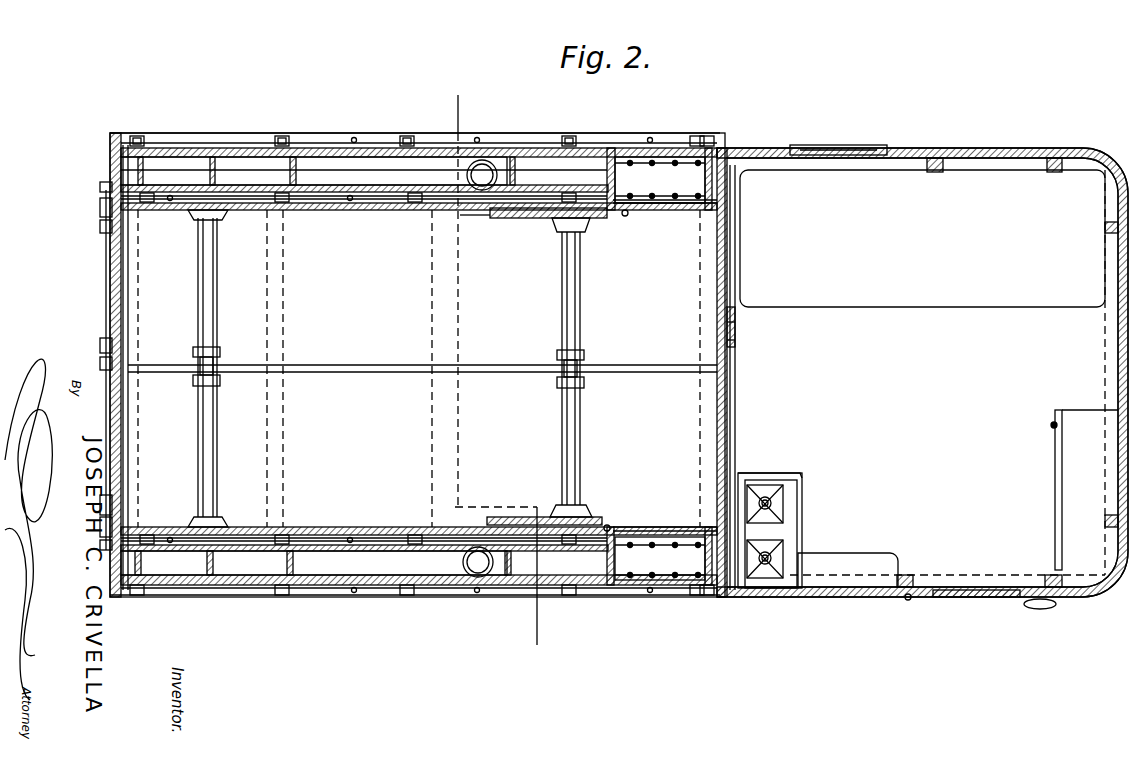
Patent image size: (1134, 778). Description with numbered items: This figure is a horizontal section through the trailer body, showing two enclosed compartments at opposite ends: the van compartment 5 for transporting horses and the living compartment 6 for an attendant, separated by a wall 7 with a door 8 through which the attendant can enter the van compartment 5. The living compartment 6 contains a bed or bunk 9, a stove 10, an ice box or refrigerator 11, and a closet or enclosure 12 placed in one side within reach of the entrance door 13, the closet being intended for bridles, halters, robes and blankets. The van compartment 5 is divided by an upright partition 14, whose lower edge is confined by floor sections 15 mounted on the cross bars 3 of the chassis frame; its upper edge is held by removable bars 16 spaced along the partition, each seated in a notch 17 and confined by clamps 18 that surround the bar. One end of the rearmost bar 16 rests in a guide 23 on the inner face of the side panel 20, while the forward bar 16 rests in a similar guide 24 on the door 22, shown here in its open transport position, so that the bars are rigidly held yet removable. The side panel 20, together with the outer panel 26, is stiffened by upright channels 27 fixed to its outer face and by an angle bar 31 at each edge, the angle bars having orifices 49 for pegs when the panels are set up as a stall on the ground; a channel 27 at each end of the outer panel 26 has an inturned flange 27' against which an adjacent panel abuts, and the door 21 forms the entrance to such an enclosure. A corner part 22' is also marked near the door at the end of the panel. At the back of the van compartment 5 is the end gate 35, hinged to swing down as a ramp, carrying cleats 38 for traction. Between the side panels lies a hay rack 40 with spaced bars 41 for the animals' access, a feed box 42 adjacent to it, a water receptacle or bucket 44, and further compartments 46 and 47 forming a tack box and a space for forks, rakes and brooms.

The cross bars 3 is at (497, 368).
The van compartment 5 is at (417, 365).
The living compartment 6 is at (898, 376).
The wall 7 is at (717, 270).
The door 8 is at (737, 322).
The bed or bunk 9 is at (922, 238).
The stove 10 is at (802, 476).
The ice box or refrigerator 11 is at (825, 553).
The closet or enclosure 12 is at (1055, 450).
The door 13 is at (922, 600).
The upright partition 14 is at (380, 372).
The floor sections 15 is at (172, 238).
The bars 16 is at (218, 280).
The notch 17 is at (218, 365).
The clamps 18 is at (193, 350).
The panel 20 is at (377, 203).
The door 21 is at (668, 208).
The door 22 is at (544, 369).
The corner bracket 22' is at (740, 130).
The guide 23 is at (225, 215).
The guide 24 is at (592, 225).
The panel 26 is at (338, 150).
The upright channels 27 is at (417, 364).
The inturned flange 27' is at (747, 608).
The angle bar 31 is at (532, 140).
The end gate 35 is at (106, 315).
The cleats 38 is at (130, 292).
The hay rack 40 is at (660, 170).
The spaced bars 41 is at (632, 160).
The feed box 42 is at (600, 165).
The water receptacle or bucket 44 is at (480, 170).
The compartment 46 is at (440, 107).
The compartment 47 is at (225, 170).
The orifices 49 is at (165, 143).